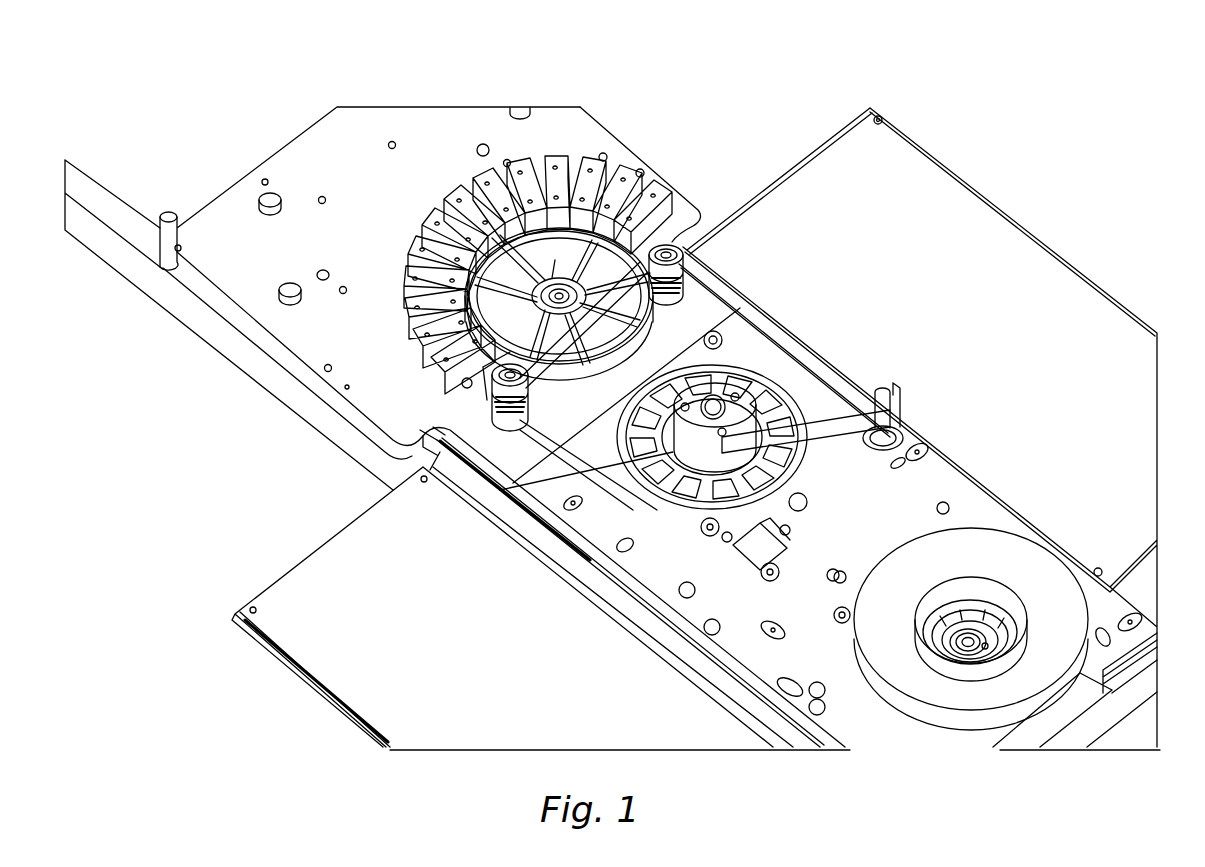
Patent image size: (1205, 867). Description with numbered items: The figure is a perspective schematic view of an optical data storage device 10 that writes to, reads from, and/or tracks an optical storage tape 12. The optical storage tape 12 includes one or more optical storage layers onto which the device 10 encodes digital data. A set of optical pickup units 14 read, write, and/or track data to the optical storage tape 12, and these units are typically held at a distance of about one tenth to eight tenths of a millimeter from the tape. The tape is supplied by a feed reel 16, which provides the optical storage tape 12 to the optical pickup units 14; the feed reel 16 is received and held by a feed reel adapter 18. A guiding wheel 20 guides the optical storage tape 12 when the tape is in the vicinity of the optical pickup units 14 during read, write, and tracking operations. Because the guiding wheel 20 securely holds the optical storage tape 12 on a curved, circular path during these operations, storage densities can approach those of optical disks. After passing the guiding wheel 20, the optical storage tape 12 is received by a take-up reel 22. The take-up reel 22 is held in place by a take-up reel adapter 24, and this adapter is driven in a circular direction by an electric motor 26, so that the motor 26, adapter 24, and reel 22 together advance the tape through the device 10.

The optical data storage device 10 is at (956, 54).
The optical storage tape 12 is at (470, 500).
The optical pickup units 14 is at (462, 175).
The feed reel 16 is at (997, 543).
The feed reel adapter 18 is at (983, 627).
The guiding wheel 20 is at (720, 274).
The take-up reel 22 is at (735, 395).
The take-up reel adapter 24 is at (750, 388).
The electric motor 26 is at (500, 470).